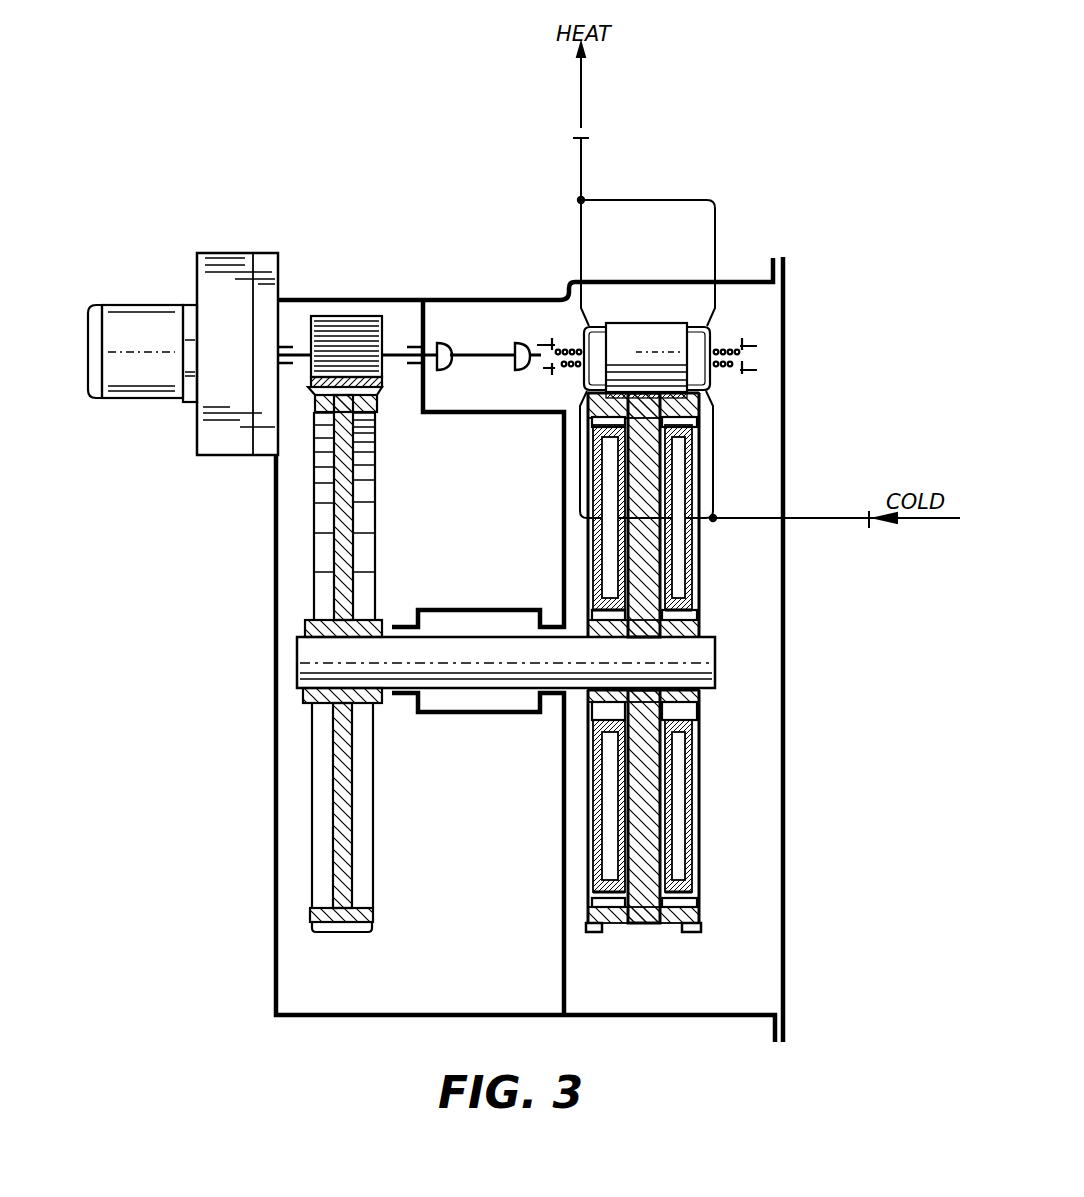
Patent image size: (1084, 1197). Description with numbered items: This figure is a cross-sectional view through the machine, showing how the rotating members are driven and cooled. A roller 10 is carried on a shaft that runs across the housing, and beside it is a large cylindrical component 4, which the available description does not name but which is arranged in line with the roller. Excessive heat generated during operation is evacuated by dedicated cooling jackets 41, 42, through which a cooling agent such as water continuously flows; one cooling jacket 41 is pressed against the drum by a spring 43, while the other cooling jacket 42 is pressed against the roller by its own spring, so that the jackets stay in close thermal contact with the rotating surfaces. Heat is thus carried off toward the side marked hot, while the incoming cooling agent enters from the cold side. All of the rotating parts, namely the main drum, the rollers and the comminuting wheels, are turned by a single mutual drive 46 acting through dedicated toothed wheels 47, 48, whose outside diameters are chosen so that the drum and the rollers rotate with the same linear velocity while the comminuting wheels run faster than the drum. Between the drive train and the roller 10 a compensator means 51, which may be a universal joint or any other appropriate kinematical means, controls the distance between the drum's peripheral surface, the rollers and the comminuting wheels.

The rotor assembly 4 is at (698, 921).
The roller 10 is at (639, 332).
The cooling jacket 41 is at (583, 332).
The cooling jacket 42 is at (590, 818).
The spring 43 is at (721, 347).
The mutual drive 46 is at (232, 253).
The toothed wheel 47 is at (348, 316).
The toothed wheel 48 is at (311, 913).
The compensator means 51 is at (469, 352).